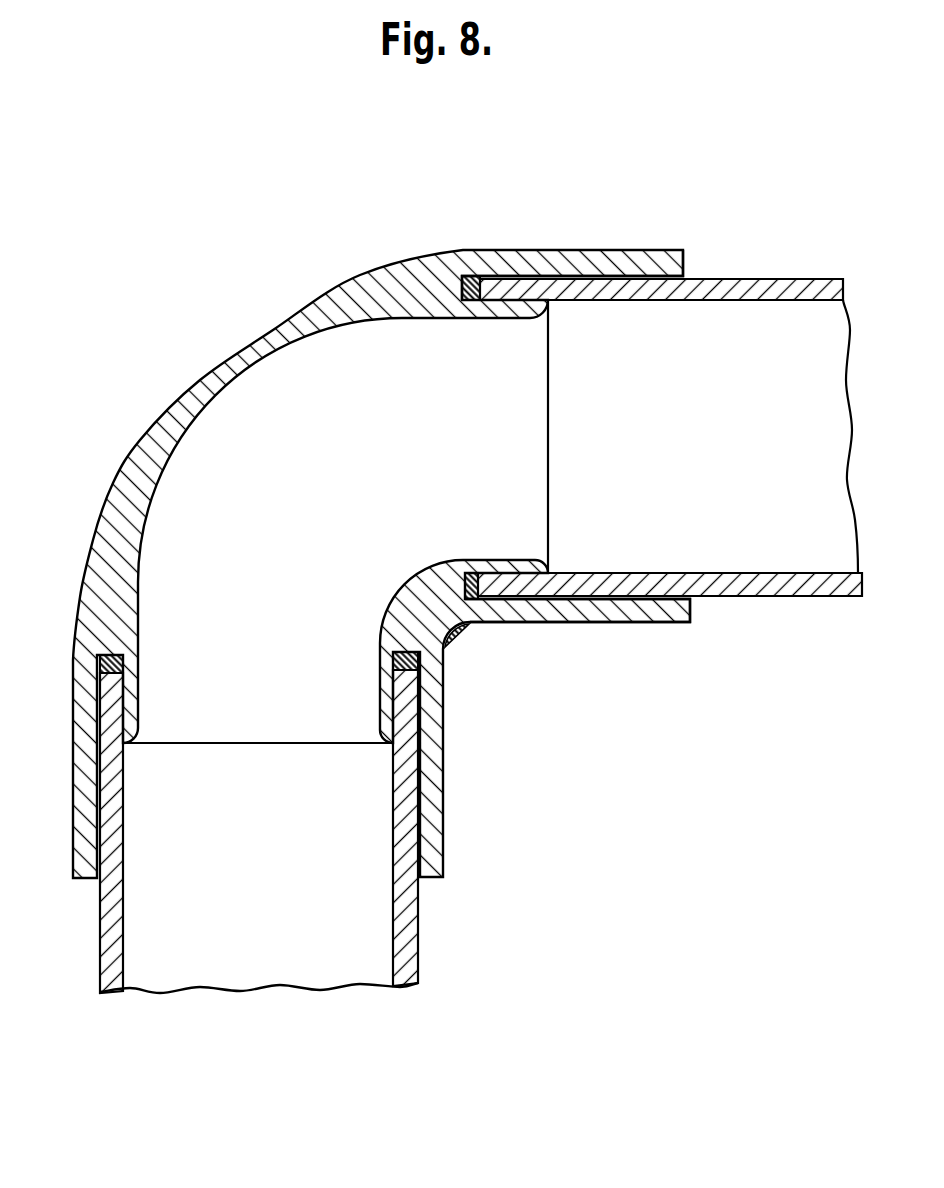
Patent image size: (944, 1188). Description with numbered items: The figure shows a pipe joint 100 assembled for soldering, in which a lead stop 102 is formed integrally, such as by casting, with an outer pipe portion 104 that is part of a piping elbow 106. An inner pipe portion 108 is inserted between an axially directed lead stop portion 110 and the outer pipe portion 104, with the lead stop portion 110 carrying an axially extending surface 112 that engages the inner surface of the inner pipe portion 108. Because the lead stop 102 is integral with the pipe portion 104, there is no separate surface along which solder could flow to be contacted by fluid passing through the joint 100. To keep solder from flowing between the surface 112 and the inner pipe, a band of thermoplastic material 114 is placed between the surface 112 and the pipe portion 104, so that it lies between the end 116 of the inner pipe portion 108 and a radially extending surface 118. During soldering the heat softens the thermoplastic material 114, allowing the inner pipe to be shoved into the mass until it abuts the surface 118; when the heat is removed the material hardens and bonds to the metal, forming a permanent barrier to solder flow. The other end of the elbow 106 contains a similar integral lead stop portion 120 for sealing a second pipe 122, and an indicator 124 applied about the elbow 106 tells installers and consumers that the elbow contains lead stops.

The joint 100 is at (359, 551).
The lead stop 102 is at (430, 562).
The pipe portion 104 is at (615, 623).
The piping elbow 106 is at (112, 480).
The inner pipe portion 108 is at (814, 278).
The lead stop portion 110 is at (525, 560).
The axially extending surface 112 is at (552, 303).
The band of thermoplastic material 114 is at (472, 573).
The end 116 is at (472, 302).
The surface 118 is at (470, 276).
The lead stop portion 120 is at (376, 633).
The second pipe 122 is at (420, 940).
The indicator 124 is at (455, 648).